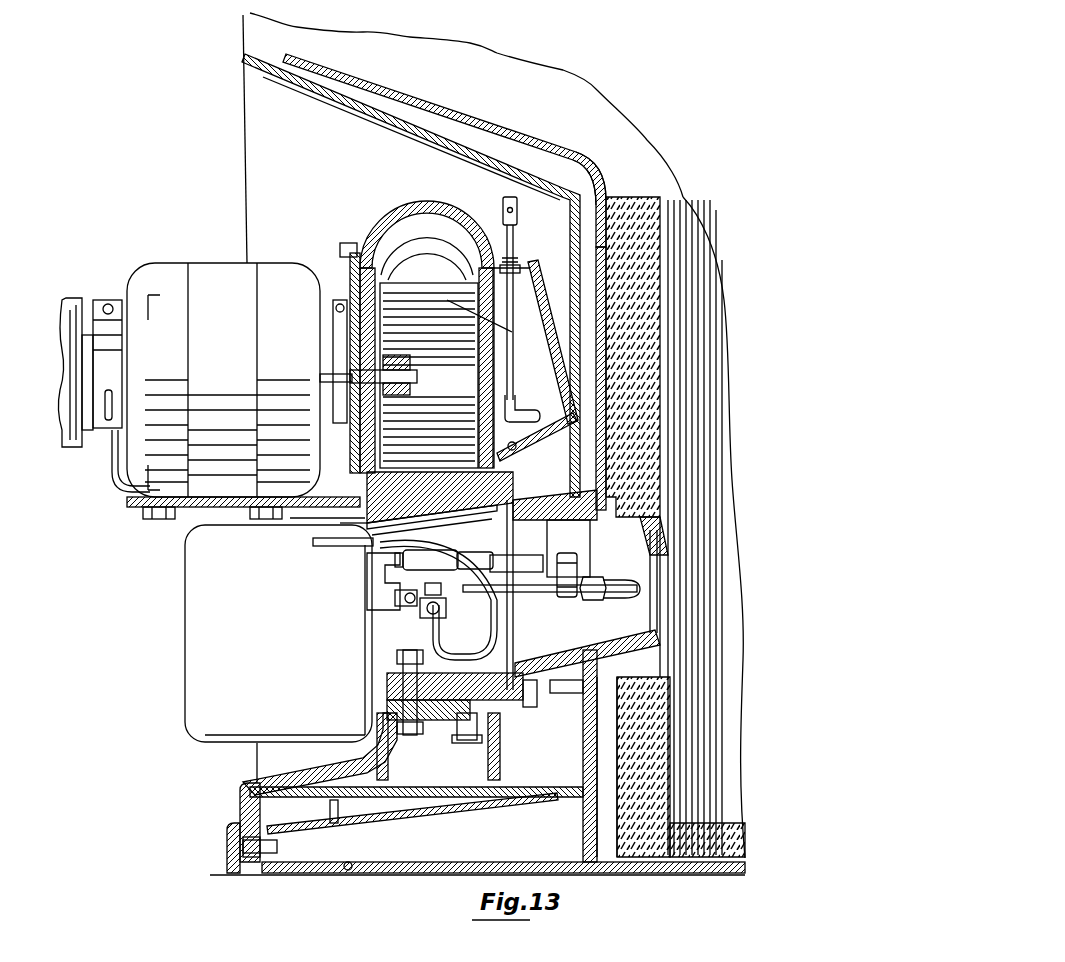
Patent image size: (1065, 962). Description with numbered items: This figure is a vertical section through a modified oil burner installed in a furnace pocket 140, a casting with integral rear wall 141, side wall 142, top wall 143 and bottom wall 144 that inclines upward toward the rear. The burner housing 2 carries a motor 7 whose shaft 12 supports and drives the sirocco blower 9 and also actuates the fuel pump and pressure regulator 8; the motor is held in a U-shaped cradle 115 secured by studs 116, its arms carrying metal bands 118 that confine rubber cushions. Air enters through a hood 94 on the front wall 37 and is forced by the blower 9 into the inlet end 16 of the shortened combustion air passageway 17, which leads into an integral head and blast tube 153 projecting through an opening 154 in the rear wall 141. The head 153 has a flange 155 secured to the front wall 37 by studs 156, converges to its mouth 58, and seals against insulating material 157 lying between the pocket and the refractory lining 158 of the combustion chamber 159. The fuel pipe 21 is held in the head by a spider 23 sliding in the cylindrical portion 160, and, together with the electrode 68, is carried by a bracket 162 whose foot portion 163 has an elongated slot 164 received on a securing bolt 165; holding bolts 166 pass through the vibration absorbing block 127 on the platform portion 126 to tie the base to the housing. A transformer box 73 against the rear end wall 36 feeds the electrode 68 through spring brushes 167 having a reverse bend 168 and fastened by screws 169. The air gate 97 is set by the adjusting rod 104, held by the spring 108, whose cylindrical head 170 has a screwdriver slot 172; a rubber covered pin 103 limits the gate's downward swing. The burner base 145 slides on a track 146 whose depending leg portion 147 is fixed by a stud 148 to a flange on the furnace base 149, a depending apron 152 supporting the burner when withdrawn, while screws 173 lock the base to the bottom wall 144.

The housing 2 is at (380, 215).
The motor 7 is at (163, 262).
The fuel pump and pressure regulator 8 is at (57, 327).
The blower 9 is at (392, 292).
The shaft 12 is at (350, 378).
The inlet end 16 is at (460, 538).
The combustion air passageway 17 is at (530, 595).
The fuel pipe 21 is at (550, 608).
The spider 23 is at (580, 617).
The rear end wall 36 is at (313, 542).
The front wall 37 is at (470, 513).
The mouth 58 is at (657, 583).
The ignition electrode 68 is at (568, 548).
The transformer box 73 is at (278, 654).
The hood 94 is at (558, 265).
The air gate 97 is at (523, 440).
The rubber covered pin 103 is at (528, 447).
The adjusting rod 104 is at (427, 256).
The spring 108 is at (447, 303).
The cradle 115 is at (104, 490).
The stud 116 is at (115, 500).
The metal band 118 is at (92, 300).
The platform portion 126 is at (385, 704).
The vibration absorbing block 127 is at (445, 810).
The pocket 140 is at (463, 138).
The rear wall 141 is at (580, 190).
The side wall 142 is at (420, 192).
The top wall 143 is at (368, 107).
The bottom wall 144 is at (552, 803).
The base 145 is at (265, 787).
The track 146 is at (388, 810).
The depending leg portion 147 is at (287, 830).
The stud 148 is at (232, 843).
The base 149 is at (350, 872).
The depending apron 152 is at (238, 874).
The integral head and blast tube 153 is at (665, 526).
The opening 154 is at (528, 698).
The flange 155 is at (500, 735).
The stud 156 is at (512, 715).
The insulating material 157 is at (607, 470).
The refractory lining 158 is at (658, 360).
The combustion chamber 159 is at (755, 297).
The cylindrical portion 160 is at (585, 642).
The bracket 162 is at (477, 623).
The foot portion 163 is at (380, 665).
The elongated slot 164 is at (372, 690).
The securing bolt 165 is at (408, 740).
The holding bolt 166 is at (462, 742).
The spring brush 167 is at (367, 583).
The reverse bend 168 is at (387, 533).
The screw 169 is at (367, 607).
The cylindrical head 170 is at (516, 217).
The screwdriver slot 172 is at (507, 190).
The screw 173 is at (343, 827).